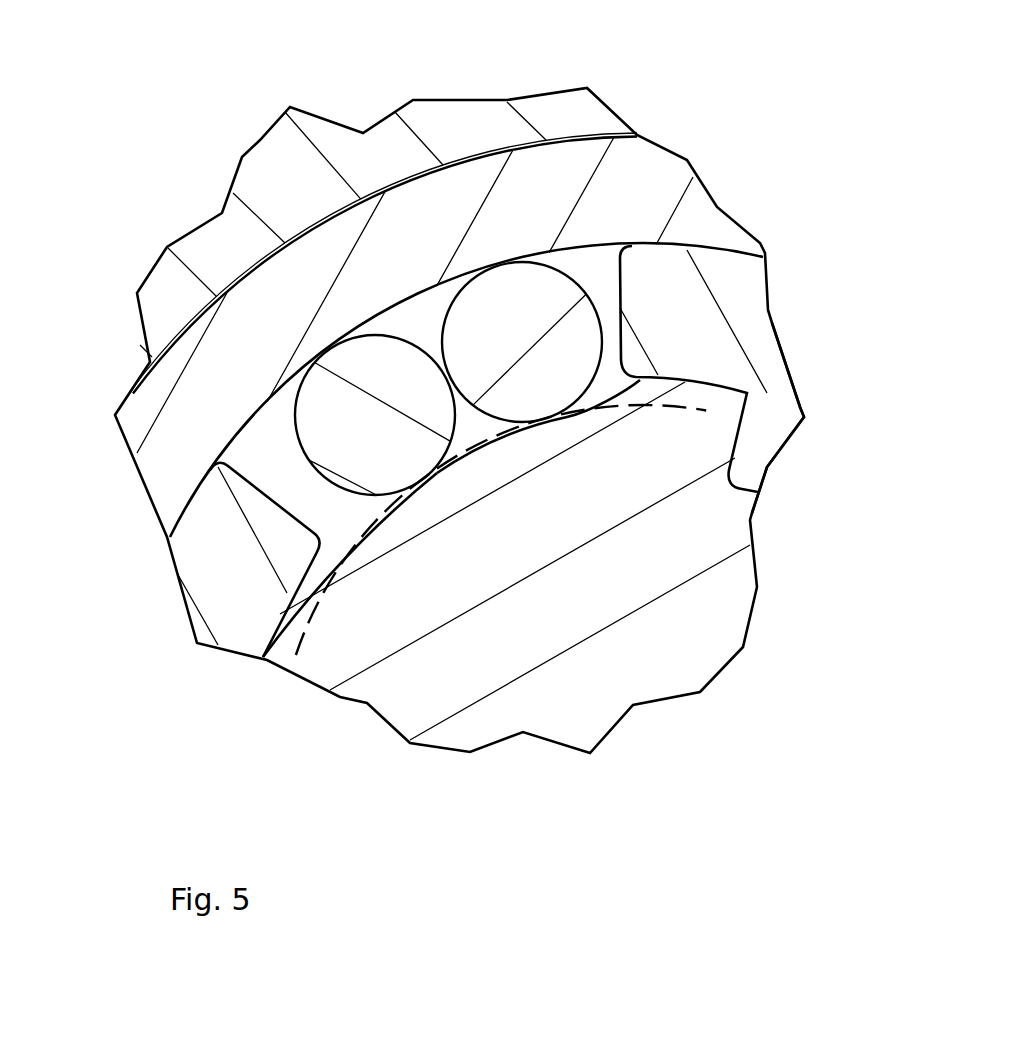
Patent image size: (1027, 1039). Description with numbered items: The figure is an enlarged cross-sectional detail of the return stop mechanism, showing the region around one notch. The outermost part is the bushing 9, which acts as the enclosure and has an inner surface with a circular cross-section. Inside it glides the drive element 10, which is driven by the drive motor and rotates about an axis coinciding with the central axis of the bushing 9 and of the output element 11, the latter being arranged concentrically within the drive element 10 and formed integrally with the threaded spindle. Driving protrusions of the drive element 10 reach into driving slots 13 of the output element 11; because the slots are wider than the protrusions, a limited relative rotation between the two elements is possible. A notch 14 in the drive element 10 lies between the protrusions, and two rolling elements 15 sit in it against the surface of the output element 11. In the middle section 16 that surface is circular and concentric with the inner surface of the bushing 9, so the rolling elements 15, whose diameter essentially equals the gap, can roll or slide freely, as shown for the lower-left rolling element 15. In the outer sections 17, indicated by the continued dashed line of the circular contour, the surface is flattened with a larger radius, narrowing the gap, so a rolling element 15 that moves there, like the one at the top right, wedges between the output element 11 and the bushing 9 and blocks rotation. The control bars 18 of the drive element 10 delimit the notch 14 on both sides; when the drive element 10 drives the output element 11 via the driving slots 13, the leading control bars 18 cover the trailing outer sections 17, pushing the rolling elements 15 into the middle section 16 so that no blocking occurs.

The bushing 9 is at (305, 323).
The drive element 10 is at (780, 345).
The output element 11 is at (667, 565).
The driving slots 13 is at (747, 440).
The notch 14 is at (593, 262).
The rolling elements 15 is at (338, 388).
The middle section 16 is at (463, 459).
The outer sections 17 is at (628, 398).
The control bars 18 is at (660, 327).